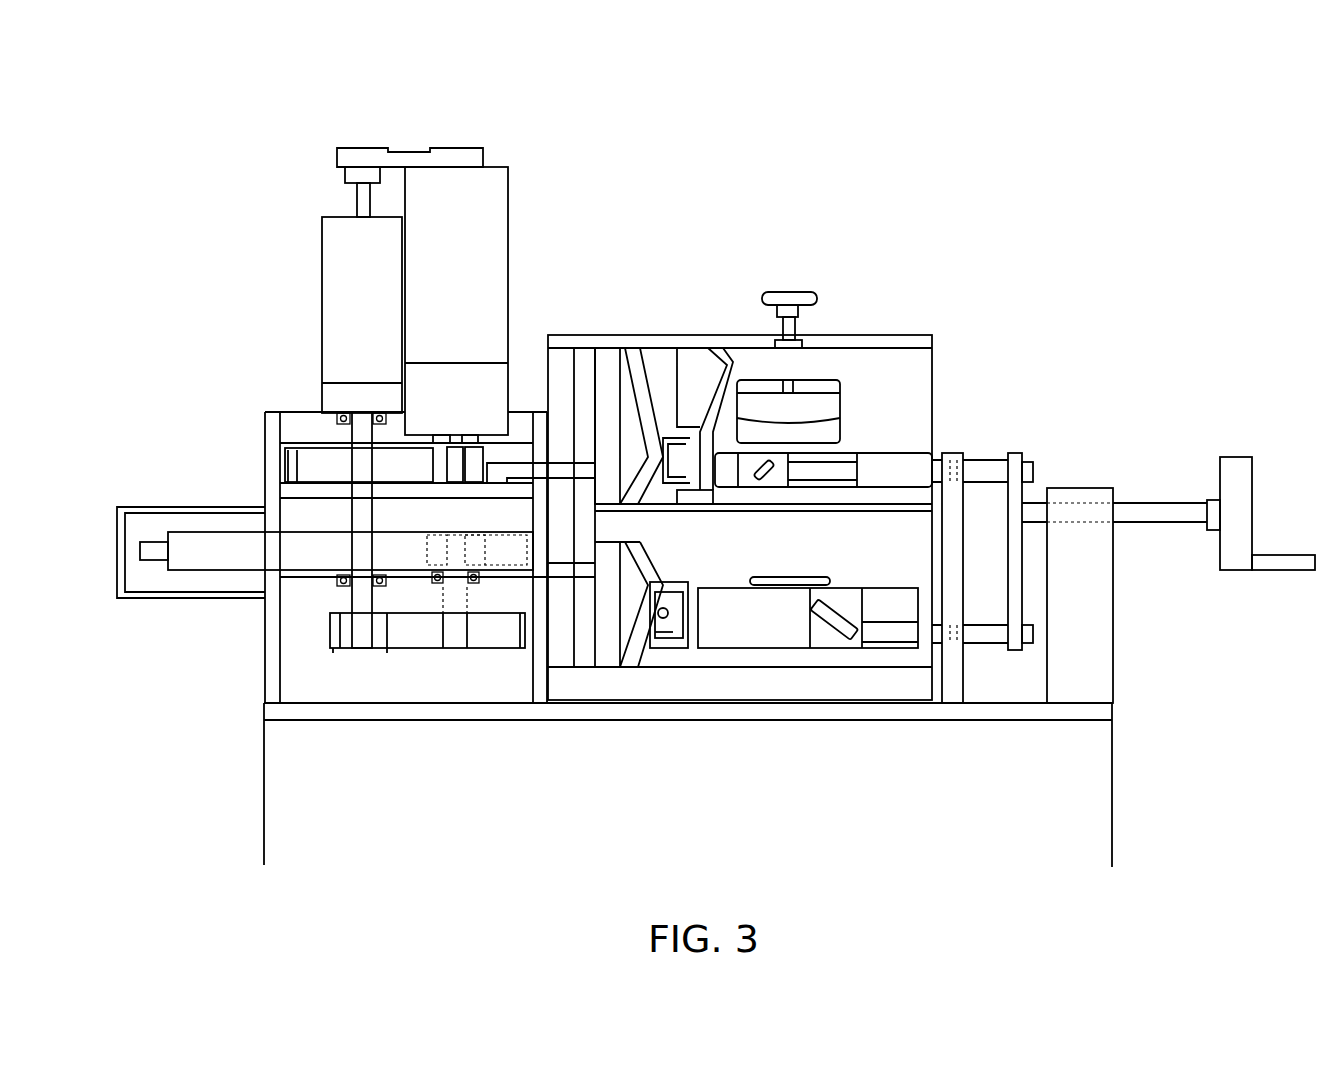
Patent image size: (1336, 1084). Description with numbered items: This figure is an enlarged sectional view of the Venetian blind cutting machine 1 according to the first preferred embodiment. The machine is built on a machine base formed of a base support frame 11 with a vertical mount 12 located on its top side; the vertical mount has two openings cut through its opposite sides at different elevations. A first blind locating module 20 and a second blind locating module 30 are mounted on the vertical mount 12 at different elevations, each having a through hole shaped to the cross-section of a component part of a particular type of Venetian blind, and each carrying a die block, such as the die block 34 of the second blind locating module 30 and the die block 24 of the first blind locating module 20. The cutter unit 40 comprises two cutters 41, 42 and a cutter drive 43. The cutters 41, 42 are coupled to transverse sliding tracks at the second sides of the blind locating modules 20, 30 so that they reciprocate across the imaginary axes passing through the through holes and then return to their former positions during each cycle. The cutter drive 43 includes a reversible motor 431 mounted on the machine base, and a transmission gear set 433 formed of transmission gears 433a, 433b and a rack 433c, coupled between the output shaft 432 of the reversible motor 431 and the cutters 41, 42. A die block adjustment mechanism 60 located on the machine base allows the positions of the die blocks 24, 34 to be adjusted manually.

The Venetian blind cutting machine 1 is at (1205, 178).
The base support frame 11 is at (1112, 803).
The vertical mount 12 is at (892, 335).
The first blind locating module 20 is at (940, 386).
The die block 24 is at (782, 460).
The second blind locating module 30 is at (942, 582).
The die block 34 is at (843, 645).
The cutter unit 40 is at (605, 197).
The cutter 41 is at (605, 367).
The cutter 42 is at (605, 638).
The cutter drive 43 is at (284, 369).
The die block adjustment mechanism 60 is at (1133, 627).
The reversible motor 431 is at (508, 203).
The output shaft 432 is at (440, 460).
The transmission gear set 433 is at (172, 432).
The transmission gear 433a is at (312, 463).
The transmission gear 433b is at (440, 471).
The rack 433c is at (183, 546).